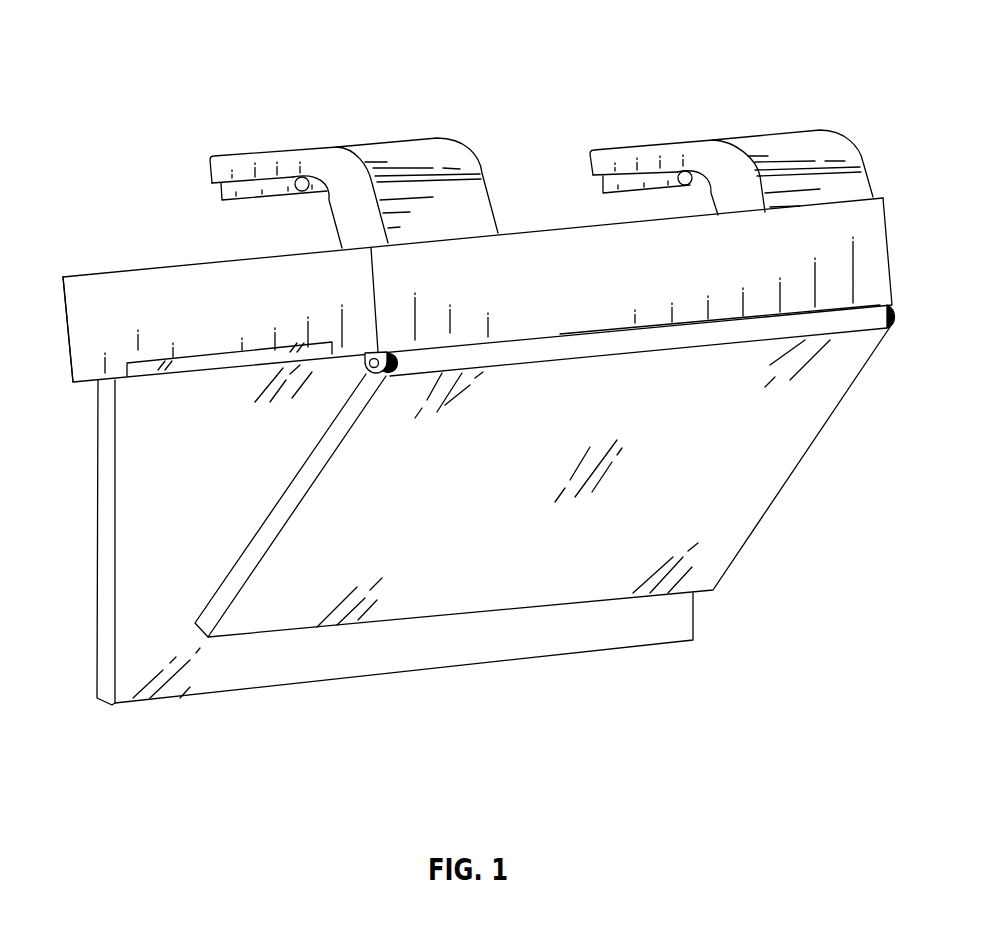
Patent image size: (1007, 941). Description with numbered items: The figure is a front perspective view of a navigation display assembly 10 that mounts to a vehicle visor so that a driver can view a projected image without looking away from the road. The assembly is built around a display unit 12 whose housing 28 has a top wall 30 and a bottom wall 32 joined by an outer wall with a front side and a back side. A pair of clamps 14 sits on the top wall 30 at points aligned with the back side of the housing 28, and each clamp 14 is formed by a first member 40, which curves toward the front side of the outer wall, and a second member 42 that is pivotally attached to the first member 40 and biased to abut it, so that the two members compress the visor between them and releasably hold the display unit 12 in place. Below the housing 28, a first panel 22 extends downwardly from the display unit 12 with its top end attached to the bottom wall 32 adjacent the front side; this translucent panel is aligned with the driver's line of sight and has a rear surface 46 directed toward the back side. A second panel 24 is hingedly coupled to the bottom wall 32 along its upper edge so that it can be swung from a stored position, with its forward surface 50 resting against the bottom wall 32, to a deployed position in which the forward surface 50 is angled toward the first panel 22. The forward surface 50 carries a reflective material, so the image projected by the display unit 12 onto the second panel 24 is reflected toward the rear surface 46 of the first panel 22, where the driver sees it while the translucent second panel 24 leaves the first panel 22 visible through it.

The navigation display assembly 10 is at (105, 59).
The display unit 12 is at (61, 256).
The clamps 14 is at (422, 118).
The first panel 22 is at (127, 703).
The second panel 24 is at (713, 589).
The housing 28 is at (70, 362).
The top wall 30 is at (135, 270).
The bottom wall 32 is at (123, 381).
The first member 40 is at (337, 147).
The second member 42 is at (253, 201).
The rear surface 46 is at (166, 631).
The forward surface 50 is at (257, 533).